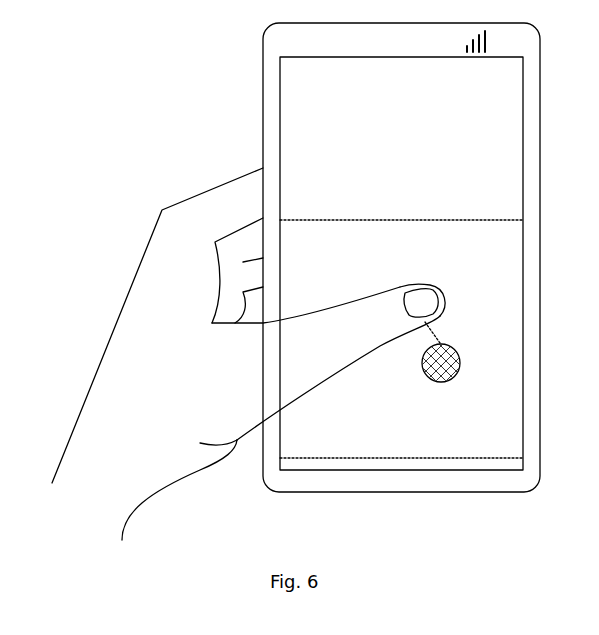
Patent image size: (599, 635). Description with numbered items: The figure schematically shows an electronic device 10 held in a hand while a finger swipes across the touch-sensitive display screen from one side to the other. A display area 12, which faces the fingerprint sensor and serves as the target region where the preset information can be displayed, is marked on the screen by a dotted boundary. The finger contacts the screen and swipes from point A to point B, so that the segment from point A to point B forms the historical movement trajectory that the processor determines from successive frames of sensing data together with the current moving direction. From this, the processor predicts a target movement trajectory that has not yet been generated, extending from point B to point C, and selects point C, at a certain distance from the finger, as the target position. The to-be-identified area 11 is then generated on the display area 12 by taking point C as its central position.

The mobile terminal 10 is at (284, 157).
The to-be-identified area 11 is at (459, 359).
The display area 12 is at (365, 218).
The point A is at (400, 286).
The point B is at (404, 286).
The point C is at (429, 371).